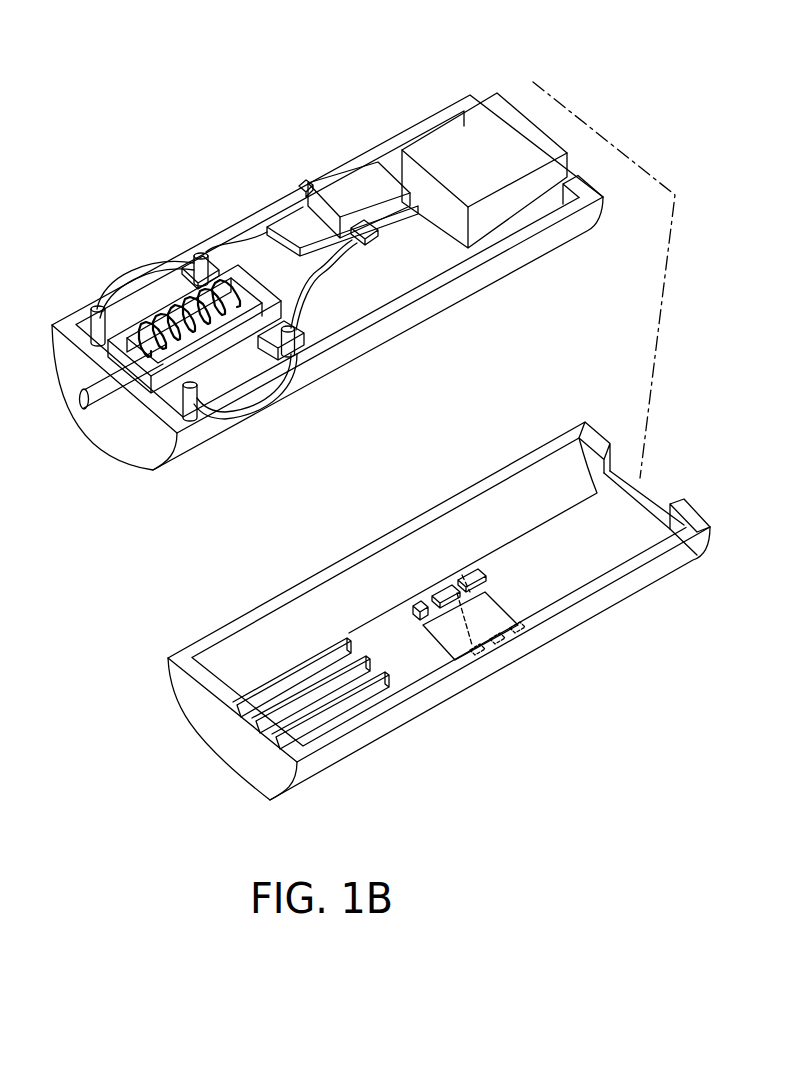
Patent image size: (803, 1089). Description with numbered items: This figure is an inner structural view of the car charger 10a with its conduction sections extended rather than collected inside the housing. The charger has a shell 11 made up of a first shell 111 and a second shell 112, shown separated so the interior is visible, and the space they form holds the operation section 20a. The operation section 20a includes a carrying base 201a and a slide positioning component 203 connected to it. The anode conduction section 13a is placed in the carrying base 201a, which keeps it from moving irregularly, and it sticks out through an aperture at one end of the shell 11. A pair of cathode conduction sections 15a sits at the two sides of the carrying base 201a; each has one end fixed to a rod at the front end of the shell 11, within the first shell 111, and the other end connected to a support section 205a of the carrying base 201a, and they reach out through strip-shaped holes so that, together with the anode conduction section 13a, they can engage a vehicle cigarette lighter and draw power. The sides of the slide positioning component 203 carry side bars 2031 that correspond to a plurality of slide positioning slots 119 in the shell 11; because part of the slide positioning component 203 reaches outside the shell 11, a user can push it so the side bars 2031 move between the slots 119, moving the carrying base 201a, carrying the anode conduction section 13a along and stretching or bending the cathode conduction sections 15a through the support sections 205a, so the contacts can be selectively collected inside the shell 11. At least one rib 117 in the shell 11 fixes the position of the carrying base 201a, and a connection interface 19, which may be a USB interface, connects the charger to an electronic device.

The car charger 10a is at (106, 41).
The shell 11 is at (55, 428).
The first shell 111 is at (481, 486).
The second shell 112 is at (423, 312).
The rib 117 is at (293, 678).
The slide positioning slots 119 is at (413, 603).
The anode conduction section 13a is at (99, 400).
The cathode conduction sections 15a is at (101, 306).
The connection interface 19 is at (454, 133).
The operation section 20a is at (352, 73).
The carrying base 201a is at (151, 317).
The slide positioning component 203 is at (366, 174).
The side bars 2031 is at (352, 222).
The support section 205a is at (201, 252).